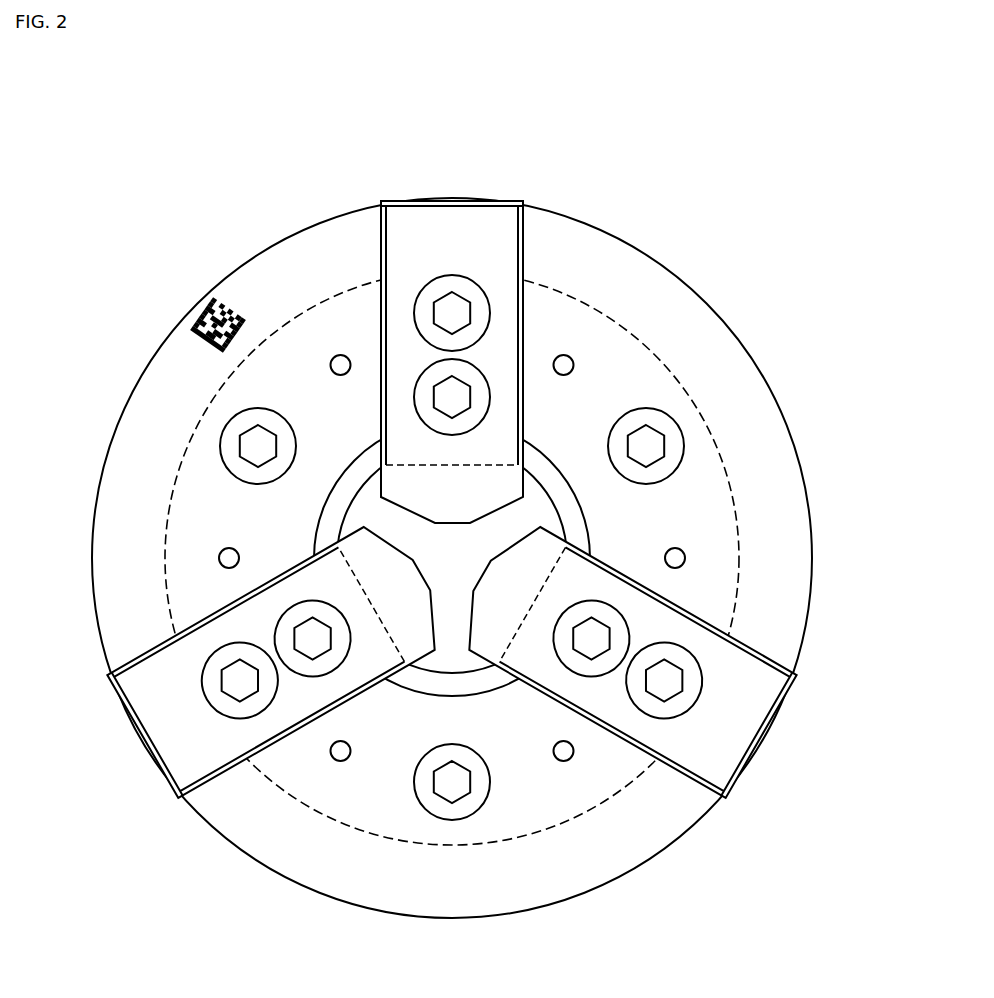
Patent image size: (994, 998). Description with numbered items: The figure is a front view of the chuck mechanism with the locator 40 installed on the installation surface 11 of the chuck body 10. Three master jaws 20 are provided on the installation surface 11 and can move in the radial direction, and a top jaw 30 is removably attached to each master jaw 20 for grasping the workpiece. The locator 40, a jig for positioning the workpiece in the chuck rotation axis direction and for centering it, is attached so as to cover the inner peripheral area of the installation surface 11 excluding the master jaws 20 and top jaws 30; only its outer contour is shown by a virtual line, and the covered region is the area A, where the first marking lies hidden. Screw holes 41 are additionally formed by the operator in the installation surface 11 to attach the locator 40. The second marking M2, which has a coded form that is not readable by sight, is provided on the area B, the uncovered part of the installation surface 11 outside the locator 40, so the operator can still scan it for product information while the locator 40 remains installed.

The chuck body 10 is at (723, 315).
The installation surface 11 is at (657, 290).
The master jaw 20 is at (519, 494).
The top jaw 30 is at (487, 230).
The locator 40 is at (297, 357).
The screw hole 41 is at (342, 355).
The second marking M2 is at (207, 312).
The area B (uncovered area) B is at (130, 503).